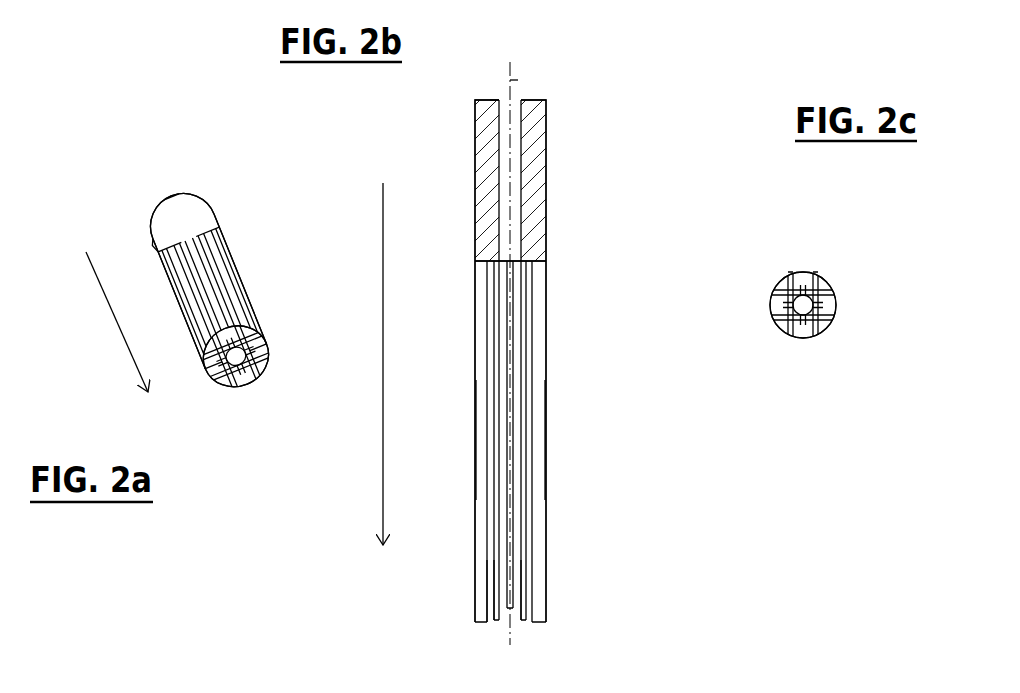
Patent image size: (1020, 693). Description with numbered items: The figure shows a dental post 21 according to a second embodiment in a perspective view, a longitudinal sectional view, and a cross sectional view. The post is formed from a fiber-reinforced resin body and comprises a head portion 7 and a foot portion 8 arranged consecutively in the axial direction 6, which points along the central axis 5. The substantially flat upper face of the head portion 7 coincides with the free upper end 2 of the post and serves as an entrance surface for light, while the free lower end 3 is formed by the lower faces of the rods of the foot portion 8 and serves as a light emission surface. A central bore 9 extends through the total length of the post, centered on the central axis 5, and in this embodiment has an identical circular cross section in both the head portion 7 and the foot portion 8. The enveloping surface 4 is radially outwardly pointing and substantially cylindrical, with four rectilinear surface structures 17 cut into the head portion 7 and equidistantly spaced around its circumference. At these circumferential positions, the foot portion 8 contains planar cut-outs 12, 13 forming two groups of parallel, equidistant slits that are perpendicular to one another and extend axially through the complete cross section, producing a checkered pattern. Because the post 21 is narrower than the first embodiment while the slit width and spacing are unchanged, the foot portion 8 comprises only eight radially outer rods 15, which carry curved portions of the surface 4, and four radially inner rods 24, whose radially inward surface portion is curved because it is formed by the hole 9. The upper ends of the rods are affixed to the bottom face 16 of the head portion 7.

In FIG. 2a, the free upper end 2 is at (155, 212).
In FIG. 2b, the free upper end 2 is at (492, 100).
In FIG. 2a, the free lower end 3 is at (267, 375).
In FIG. 2b, the free lower end 3 is at (540, 626).
In FIG. 2a, the enveloping surface 4 is at (187, 293).
In FIG. 2b, the enveloping surface 4 is at (475, 382).
In FIG. 2b, the central axis 5 is at (510, 80).
In FIG. 2a, the axial direction 6 is at (103, 302).
In FIG. 2b, the axial direction 6 is at (382, 472).
In FIG. 2a, the head portion 7 is at (204, 218).
In FIG. 2b, the head portion 7 is at (528, 205).
In FIG. 2a, the foot portion 8 is at (226, 262).
In FIG. 2b, the foot portion 8 is at (480, 425).
In FIG. 2c, the foot portion 8 is at (793, 322).
In FIG. 2a, the central bore 9 is at (253, 370).
In FIG. 2b, the central bore 9 is at (503, 90).
In FIG. 2c, the central bore 9 is at (806, 303).
In FIG. 2a, the planar cut-outs 12 is at (270, 350).
In FIG. 2c, the planar cut-outs 12 is at (767, 288).
In FIG. 2a, the planar cut-outs 13 is at (241, 397).
In FIG. 2b, the planar cut-outs 13 is at (491, 626).
In FIG. 2c, the planar cut-outs 13 is at (787, 270).
In FIG. 2a, the radially outer rods 15 is at (218, 360).
In FIG. 2b, the radially outer rods 15 is at (478, 498).
In FIG. 2c, the radially outer rods 15 is at (833, 318).
In FIG. 2a, the bottom face 16 is at (178, 243).
In FIG. 2b, the bottom face 16 is at (532, 263).
In FIG. 2a, the surface structures 17 is at (186, 196).
In FIG. 2a, the dental post 21 is at (230, 170).
In FIG. 2b, the dental post 21 is at (578, 82).
In FIG. 2c, the dental post 21 is at (853, 256).
In FIG. 2a, the radially inner rods 24 is at (255, 331).
In FIG. 2b, the radially inner rods 24 is at (498, 607).
In FIG. 2c, the radially inner rods 24 is at (812, 333).